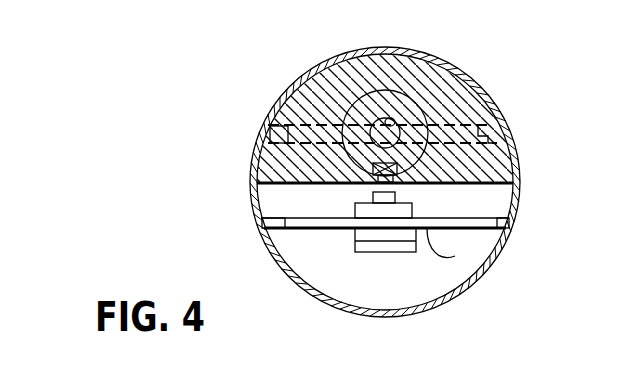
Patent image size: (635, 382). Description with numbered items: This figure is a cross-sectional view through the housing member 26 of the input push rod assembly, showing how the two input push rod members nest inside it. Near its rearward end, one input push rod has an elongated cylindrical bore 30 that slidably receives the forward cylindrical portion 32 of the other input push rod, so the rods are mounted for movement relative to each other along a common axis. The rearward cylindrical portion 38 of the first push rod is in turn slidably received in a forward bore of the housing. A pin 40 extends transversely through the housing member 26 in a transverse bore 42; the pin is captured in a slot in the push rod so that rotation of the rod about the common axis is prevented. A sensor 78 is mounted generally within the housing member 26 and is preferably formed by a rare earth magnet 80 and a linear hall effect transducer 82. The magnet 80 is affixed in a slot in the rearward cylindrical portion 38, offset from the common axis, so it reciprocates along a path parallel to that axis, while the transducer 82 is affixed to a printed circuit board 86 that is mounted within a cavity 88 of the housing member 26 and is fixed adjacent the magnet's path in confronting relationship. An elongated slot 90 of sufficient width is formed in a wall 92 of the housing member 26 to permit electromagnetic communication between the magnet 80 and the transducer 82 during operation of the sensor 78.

The housing member 26 is at (497, 101).
The elongated cylindrical bore 30 is at (400, 115).
The forward cylindrical portion 32 is at (377, 127).
The rearward cylindrical portion 38 is at (347, 117).
The pin 40 is at (490, 139).
The transverse bore 42 is at (266, 129).
The sensor 78 is at (310, 207).
The rare earth magnet 80 is at (403, 187).
The linear hall effect transducer 82 is at (375, 195).
The printed circuit board 86 is at (458, 244).
The cavity 88 is at (368, 295).
The elongated slot 90 is at (382, 185).
The wall 92 is at (498, 186).